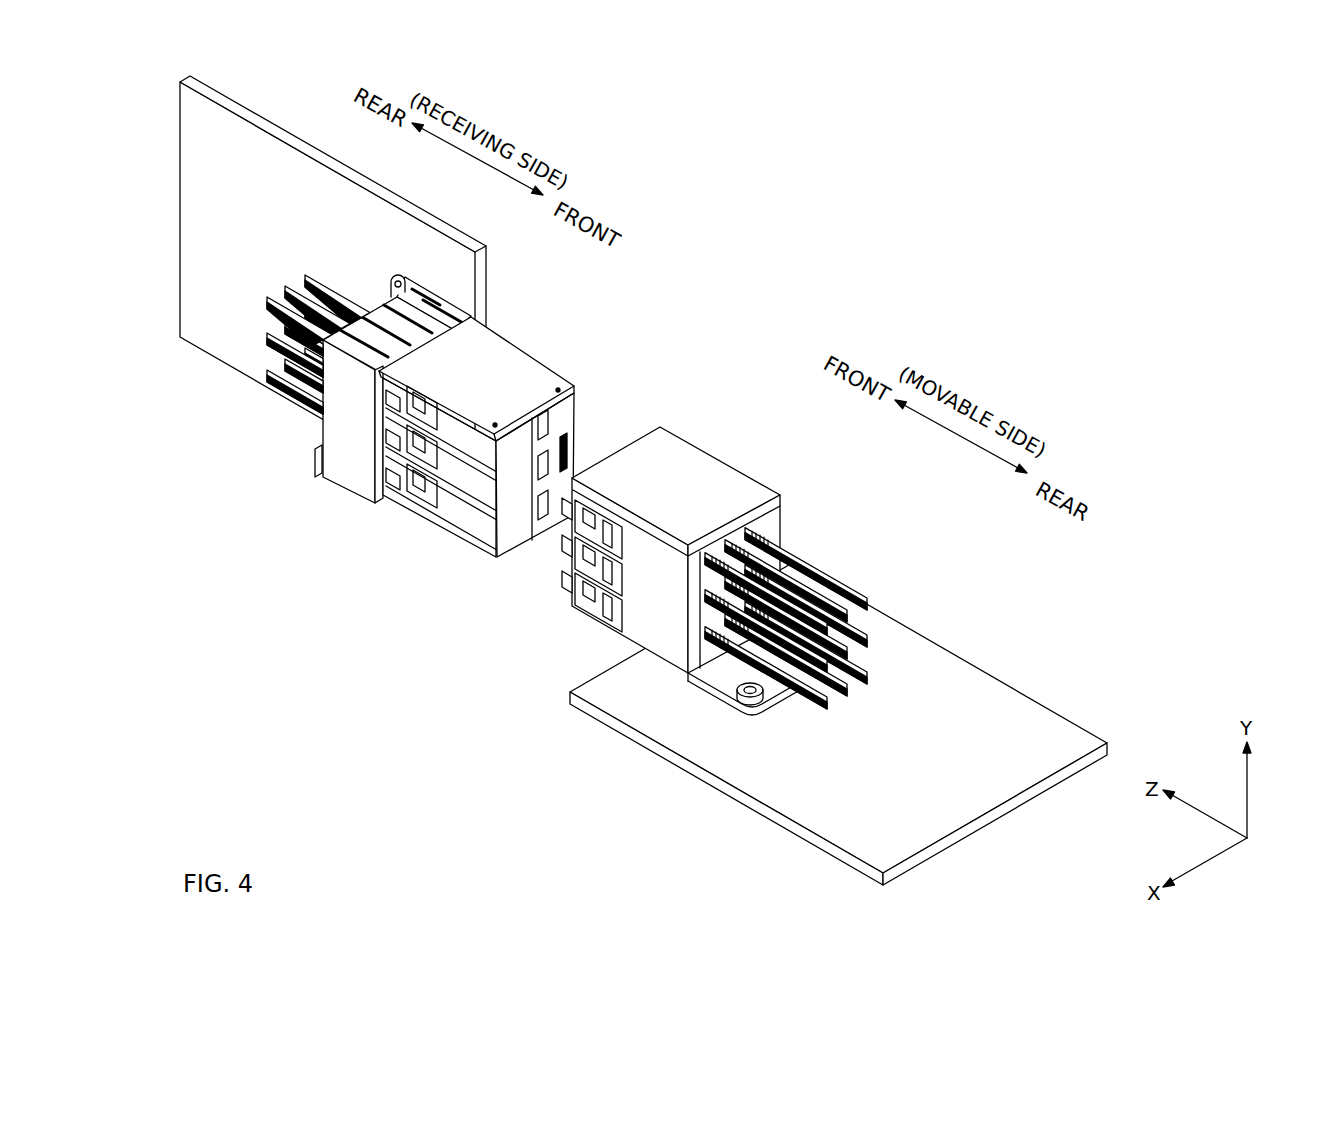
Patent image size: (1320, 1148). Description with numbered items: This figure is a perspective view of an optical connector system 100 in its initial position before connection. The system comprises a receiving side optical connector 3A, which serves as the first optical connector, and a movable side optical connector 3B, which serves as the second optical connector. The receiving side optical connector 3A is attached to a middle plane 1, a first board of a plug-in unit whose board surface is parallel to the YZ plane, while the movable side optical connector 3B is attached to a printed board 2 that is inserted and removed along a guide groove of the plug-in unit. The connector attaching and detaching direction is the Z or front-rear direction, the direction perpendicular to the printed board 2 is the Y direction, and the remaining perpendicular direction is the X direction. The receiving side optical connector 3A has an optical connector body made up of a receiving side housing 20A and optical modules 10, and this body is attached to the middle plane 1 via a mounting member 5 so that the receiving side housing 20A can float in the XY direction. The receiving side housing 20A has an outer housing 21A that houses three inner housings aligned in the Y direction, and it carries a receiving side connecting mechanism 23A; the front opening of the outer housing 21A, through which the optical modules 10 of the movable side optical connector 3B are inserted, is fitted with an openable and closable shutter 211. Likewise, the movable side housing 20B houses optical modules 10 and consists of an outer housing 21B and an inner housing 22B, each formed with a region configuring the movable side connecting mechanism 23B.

The middle plane 1 is at (292, 162).
The printed board 2 is at (765, 795).
The receiving side optical connector 3A is at (290, 519).
The movable side optical connector 3B is at (538, 713).
The mounting member 5 is at (348, 480).
The optical modules 10 is at (292, 318).
The receiving side housing 20A is at (511, 442).
The movable side housing 20B is at (718, 557).
The outer housing 21A is at (523, 370).
The outer housing 21B is at (708, 470).
The inner housing 22B is at (780, 518).
The receiving side connecting mechanism 23A is at (411, 525).
The movable side connecting mechanism 23B is at (572, 616).
The shutter 211 is at (558, 428).
The optical connector system 100 is at (379, 814).